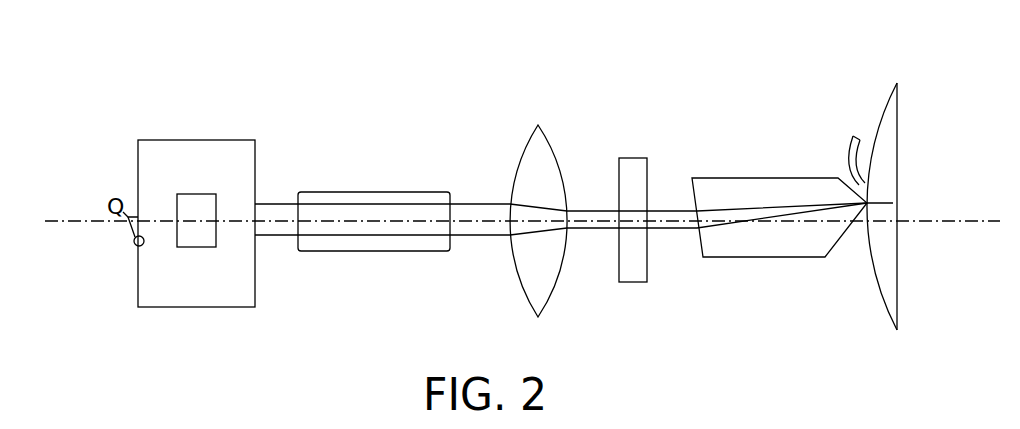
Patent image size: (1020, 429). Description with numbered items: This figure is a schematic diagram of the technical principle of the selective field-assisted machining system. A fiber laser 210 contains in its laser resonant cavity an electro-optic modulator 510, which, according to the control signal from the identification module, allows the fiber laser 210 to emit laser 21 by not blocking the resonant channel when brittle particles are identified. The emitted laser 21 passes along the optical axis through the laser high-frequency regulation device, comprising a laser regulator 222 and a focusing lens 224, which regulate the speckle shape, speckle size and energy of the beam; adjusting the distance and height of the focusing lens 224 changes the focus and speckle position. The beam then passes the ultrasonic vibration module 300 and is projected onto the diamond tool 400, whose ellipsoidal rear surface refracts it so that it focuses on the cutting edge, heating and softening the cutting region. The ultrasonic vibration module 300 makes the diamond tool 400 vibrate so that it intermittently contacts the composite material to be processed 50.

The fiber laser 210 is at (163, 170).
The laser 21 is at (275, 198).
The laser regulator 222 is at (371, 190).
The focusing lens 224 is at (520, 187).
The ultrasonic vibration module 300 is at (627, 187).
The diamond tool 400 is at (705, 190).
The composite material to be processed 50 is at (893, 192).
The electro-optic modulator 510 is at (207, 232).